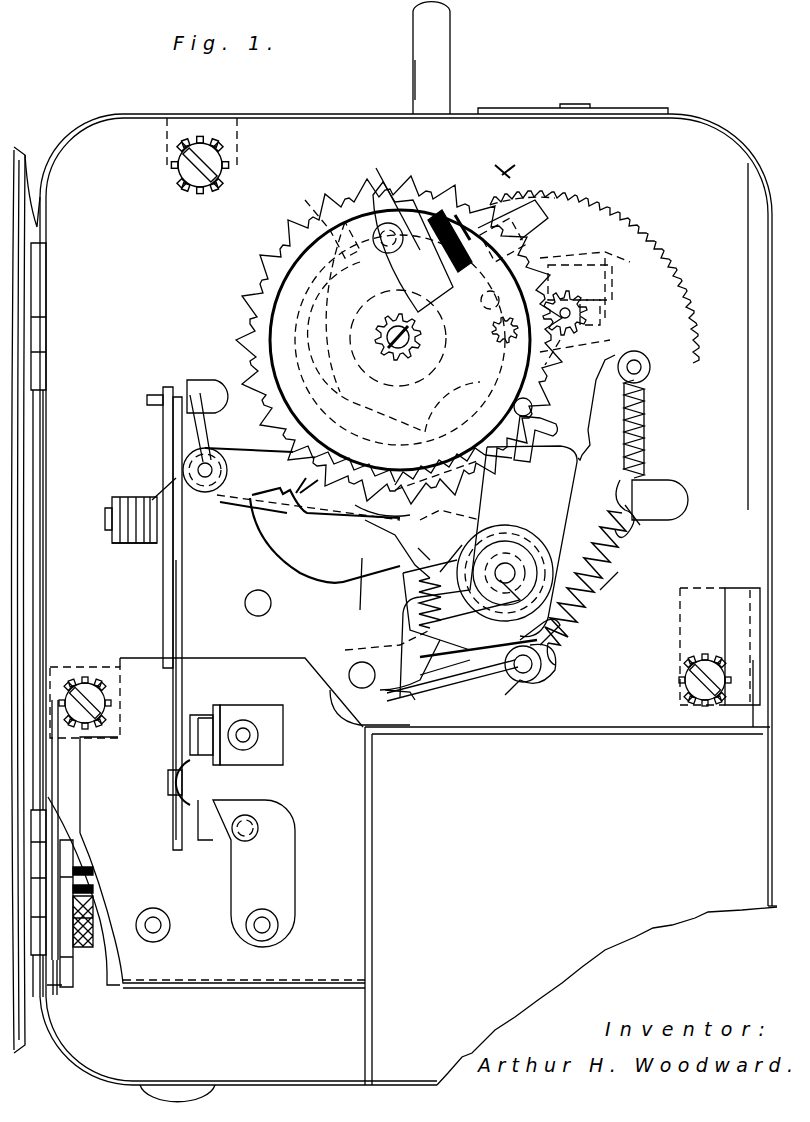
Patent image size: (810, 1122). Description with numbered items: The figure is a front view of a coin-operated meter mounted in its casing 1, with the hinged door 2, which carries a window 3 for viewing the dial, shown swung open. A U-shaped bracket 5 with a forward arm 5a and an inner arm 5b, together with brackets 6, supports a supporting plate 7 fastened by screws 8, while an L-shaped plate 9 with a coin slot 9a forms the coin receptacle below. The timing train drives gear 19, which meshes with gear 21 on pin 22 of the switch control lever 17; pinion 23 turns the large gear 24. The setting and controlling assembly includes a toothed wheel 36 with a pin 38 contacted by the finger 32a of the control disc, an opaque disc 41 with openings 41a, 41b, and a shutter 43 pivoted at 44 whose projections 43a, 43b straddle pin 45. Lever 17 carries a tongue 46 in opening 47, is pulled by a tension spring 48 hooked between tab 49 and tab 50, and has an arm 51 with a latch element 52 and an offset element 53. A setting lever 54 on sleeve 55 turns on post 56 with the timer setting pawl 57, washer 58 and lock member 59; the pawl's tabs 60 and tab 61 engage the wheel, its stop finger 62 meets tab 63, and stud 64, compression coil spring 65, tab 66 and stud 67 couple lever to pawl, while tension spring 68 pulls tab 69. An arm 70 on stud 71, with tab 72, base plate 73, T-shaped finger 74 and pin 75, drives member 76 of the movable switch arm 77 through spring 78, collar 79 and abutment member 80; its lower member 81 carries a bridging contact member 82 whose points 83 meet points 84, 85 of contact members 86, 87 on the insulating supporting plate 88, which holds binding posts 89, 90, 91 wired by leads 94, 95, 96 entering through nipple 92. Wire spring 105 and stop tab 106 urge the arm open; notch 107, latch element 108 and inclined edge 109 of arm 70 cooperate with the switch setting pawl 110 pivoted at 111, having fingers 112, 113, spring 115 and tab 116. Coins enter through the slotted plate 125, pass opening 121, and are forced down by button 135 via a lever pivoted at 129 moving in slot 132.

The casing 1 is at (285, 112).
The door 2 is at (20, 1033).
The window 3 is at (404, 324).
The U-shaped bracket 5 is at (70, 700).
The forward arm 5a is at (735, 590).
The inner arm 5b is at (690, 590).
The brackets 6 is at (237, 140).
The supporting plate 7 is at (575, 735).
The screws 8 is at (195, 182).
The plate 9 is at (455, 735).
The slot 9a is at (538, 737).
The switch control lever 17 is at (594, 286).
The gear 19 is at (425, 387).
The gear 21 is at (670, 240).
The pin 22 is at (590, 300).
The pinion 23 is at (570, 305).
The gear 24 is at (505, 215).
The finger 32a is at (329, 244).
The toothed wheel 36 is at (252, 300).
The pin 38 is at (307, 205).
The opaque disc 41 is at (268, 282).
The opening 41a is at (520, 232).
The opening 41b is at (489, 336).
The shutter 43 is at (380, 268).
The projection 43a is at (390, 186).
The projection 43b is at (445, 178).
The pivot 44 is at (375, 252).
The pin 45 is at (517, 398).
The tongue 46 is at (577, 400).
The opening 47 is at (583, 268).
The tension spring 48 is at (645, 430).
The tab 49 is at (652, 372).
The tab 50 is at (662, 490).
The arm 51 is at (420, 452).
The latch element 52 is at (432, 522).
The forwardly offset element 53 is at (480, 480).
The setting lever 54 is at (510, 660).
The sleeve 55 is at (505, 545).
The post 56 is at (515, 555).
The timer setting pawl 57 is at (590, 490).
The washer 58 is at (610, 520).
The lock member 59 is at (618, 548).
The tabs 60 is at (545, 452).
The tab 61 is at (255, 510).
The stop finger 62 is at (430, 690).
The tab 63 is at (395, 650).
The stud 64 is at (480, 614).
The compression coil spring 65 is at (418, 620).
The tab 66 is at (411, 547).
The stud 67 is at (425, 600).
The tension spring 68 is at (622, 572).
The tab 69 is at (540, 672).
The arm 70 is at (233, 495).
The stud 71 is at (198, 470).
The tab 72 is at (185, 460).
The base plate 73 is at (165, 412).
The T-shaped finger 74 is at (147, 390).
The pin 75 is at (105, 515).
The member 76 is at (173, 572).
The movable switch arm 77 is at (182, 617).
The compression coil spring 78 is at (115, 492).
The flanged collar 79 is at (144, 486).
The abutment member 80 is at (112, 540).
The lower member 81 is at (182, 676).
The bridging contact member 82 is at (190, 782).
The contact points 83 is at (205, 712).
The point 84 is at (222, 705).
The point 85 is at (230, 840).
The contact member 86 is at (275, 735).
The contact member 87 is at (283, 862).
The supporting plate 88 is at (300, 972).
The binding post 89 is at (255, 745).
The binding post 90 is at (280, 920).
The binding post 91 is at (165, 935).
The nipple 92 is at (72, 990).
The lead wire 94 is at (80, 876).
The lead wire 95 is at (84, 893).
The lead wire 96 is at (88, 920).
The wire spring 105 is at (205, 430).
The tab 106 is at (190, 380).
The notch 107 is at (368, 522).
The latch element 108 is at (355, 505).
The inclined edge 109 is at (352, 520).
The switch setting pawl 110 is at (360, 628).
The pivot 111 is at (355, 665).
The long finger 112 is at (398, 338).
The short finger 113 is at (394, 549).
The wire spring 115 is at (470, 668).
The tab 116 is at (396, 681).
The opening 121 is at (545, 665).
The plate 125 is at (650, 108).
The pivot 129 is at (258, 616).
The slot 132 is at (597, 620).
The button 135 is at (450, 70).